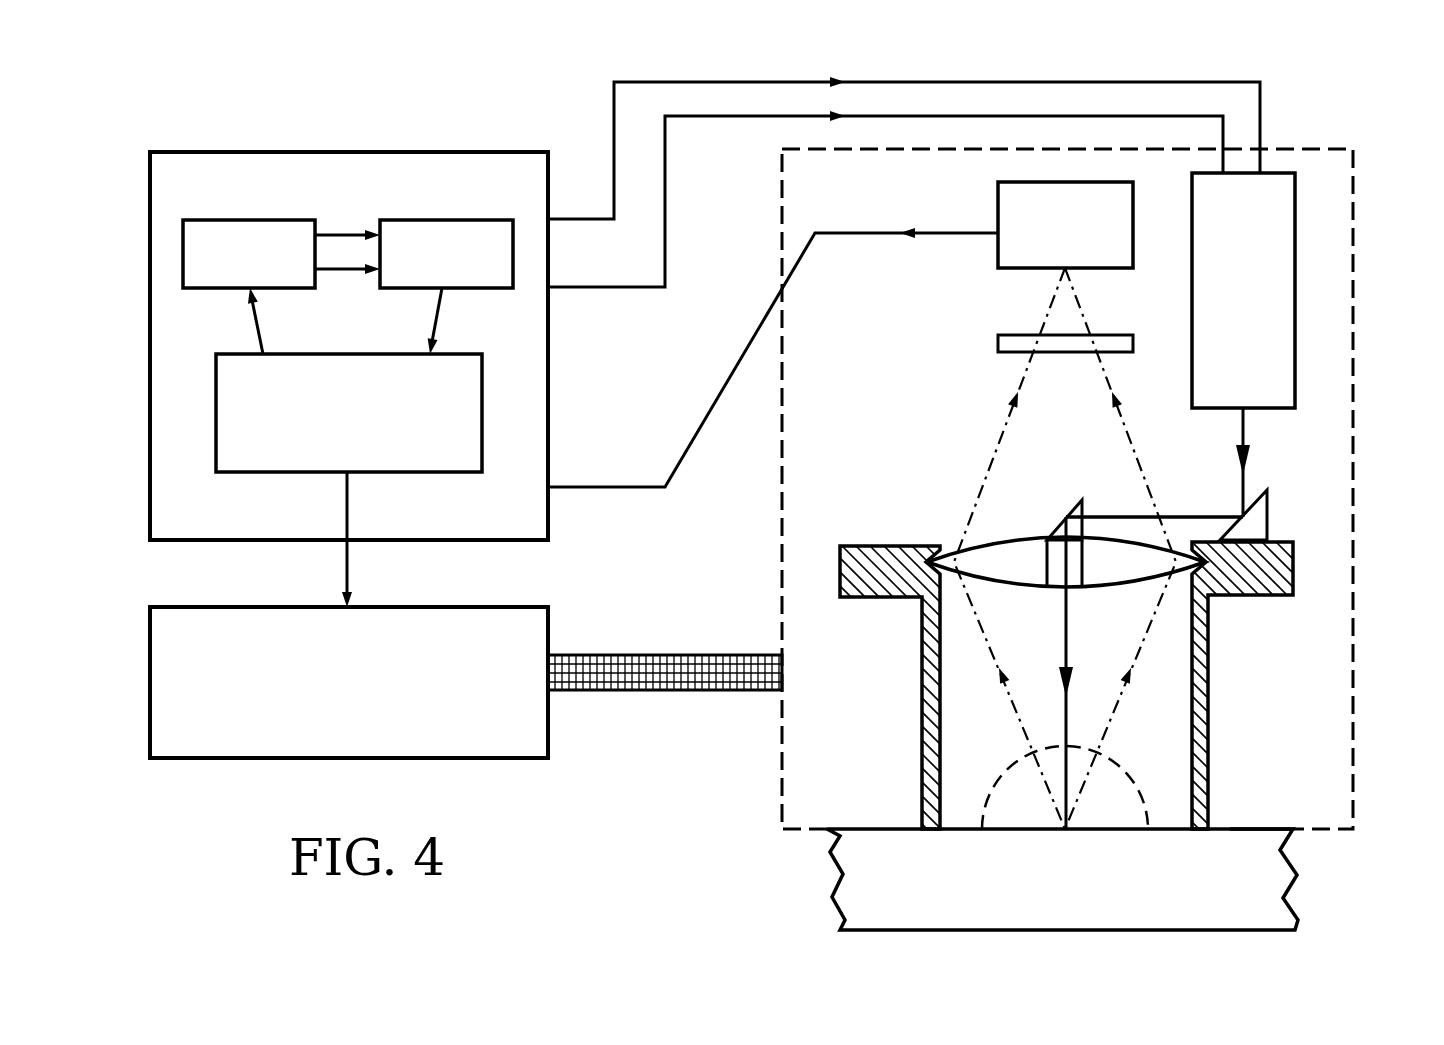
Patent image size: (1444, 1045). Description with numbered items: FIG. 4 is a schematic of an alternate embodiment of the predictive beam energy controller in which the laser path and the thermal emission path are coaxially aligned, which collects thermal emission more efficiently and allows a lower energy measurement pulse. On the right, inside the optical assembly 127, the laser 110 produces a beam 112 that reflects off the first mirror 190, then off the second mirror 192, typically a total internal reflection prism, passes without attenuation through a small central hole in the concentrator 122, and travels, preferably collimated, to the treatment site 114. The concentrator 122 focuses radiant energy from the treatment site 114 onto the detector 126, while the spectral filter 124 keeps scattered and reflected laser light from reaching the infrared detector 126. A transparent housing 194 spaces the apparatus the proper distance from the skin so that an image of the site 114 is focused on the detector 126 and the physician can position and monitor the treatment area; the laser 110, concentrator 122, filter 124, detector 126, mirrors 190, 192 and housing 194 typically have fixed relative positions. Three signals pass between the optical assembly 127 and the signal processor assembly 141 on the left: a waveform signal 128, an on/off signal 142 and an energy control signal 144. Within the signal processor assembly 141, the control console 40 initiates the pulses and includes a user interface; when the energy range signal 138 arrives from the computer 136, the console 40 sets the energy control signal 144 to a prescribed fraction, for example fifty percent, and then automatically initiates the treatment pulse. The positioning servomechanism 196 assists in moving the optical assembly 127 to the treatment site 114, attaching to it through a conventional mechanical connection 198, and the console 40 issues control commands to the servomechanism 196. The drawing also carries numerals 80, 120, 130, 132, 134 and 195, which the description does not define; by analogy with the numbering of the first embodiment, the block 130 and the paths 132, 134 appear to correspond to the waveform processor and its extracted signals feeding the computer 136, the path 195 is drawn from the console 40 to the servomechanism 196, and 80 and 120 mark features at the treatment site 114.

The control console 40 is at (333, 422).
The substrate surface 80 is at (1276, 829).
The laser 110 is at (1223, 283).
The beam 112 is at (1247, 430).
The treatment site 114 is at (1045, 888).
The ablation region 120 is at (1135, 782).
The concentrator 122 is at (1128, 585).
The spectral filter 124 is at (998, 344).
The detector 126 is at (1045, 232).
The optical assembly 127 is at (1358, 290).
The waveform signal 128 is at (696, 434).
The processor 130 is at (226, 268).
The data line 132 is at (343, 234).
The data line 134 is at (343, 270).
The computer 136 is at (425, 268).
The energy range signal 138 is at (452, 310).
The signal processor assembly 141 is at (237, 152).
The on/off signal 142 is at (256, 316).
The energy control signal 144 is at (612, 104).
The first mirror 190 is at (1247, 520).
The second mirror 192 is at (1053, 532).
The transparent housing 194 is at (922, 698).
The output line 195 is at (350, 565).
The positioning servomechanism 196 is at (327, 691).
The mechanical connection 198 is at (693, 692).